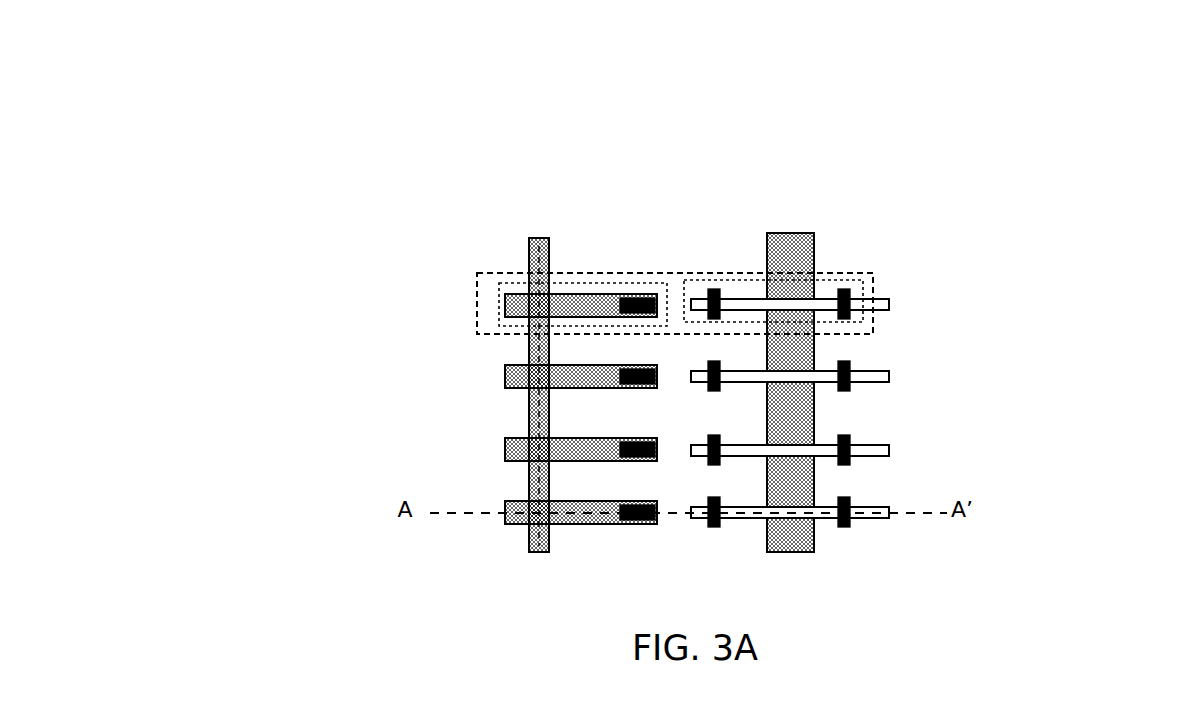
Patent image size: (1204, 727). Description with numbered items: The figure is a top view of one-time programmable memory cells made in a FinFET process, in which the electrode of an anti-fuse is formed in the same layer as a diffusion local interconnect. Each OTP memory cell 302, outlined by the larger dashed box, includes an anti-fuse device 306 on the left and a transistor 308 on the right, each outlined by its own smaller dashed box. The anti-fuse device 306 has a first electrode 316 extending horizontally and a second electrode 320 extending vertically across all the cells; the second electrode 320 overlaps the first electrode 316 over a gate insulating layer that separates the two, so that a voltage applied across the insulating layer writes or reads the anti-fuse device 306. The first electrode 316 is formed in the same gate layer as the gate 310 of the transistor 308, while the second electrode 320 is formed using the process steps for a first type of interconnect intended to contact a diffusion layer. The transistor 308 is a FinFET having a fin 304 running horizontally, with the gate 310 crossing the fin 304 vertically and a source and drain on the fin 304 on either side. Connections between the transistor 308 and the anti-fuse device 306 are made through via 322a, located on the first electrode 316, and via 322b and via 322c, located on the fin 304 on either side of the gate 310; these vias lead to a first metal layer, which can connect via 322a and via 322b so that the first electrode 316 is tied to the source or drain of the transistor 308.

The OTP memory cell 302 is at (478, 273).
The fin 304 is at (890, 299).
The anti-fuse device 306 is at (499, 308).
The transistor 308 is at (855, 328).
The gate 310 is at (789, 233).
The first electrode 316 is at (512, 302).
The second electrode 320 is at (531, 239).
The via 322a is at (627, 295).
The via 322b is at (711, 289).
The via 322c is at (844, 288).